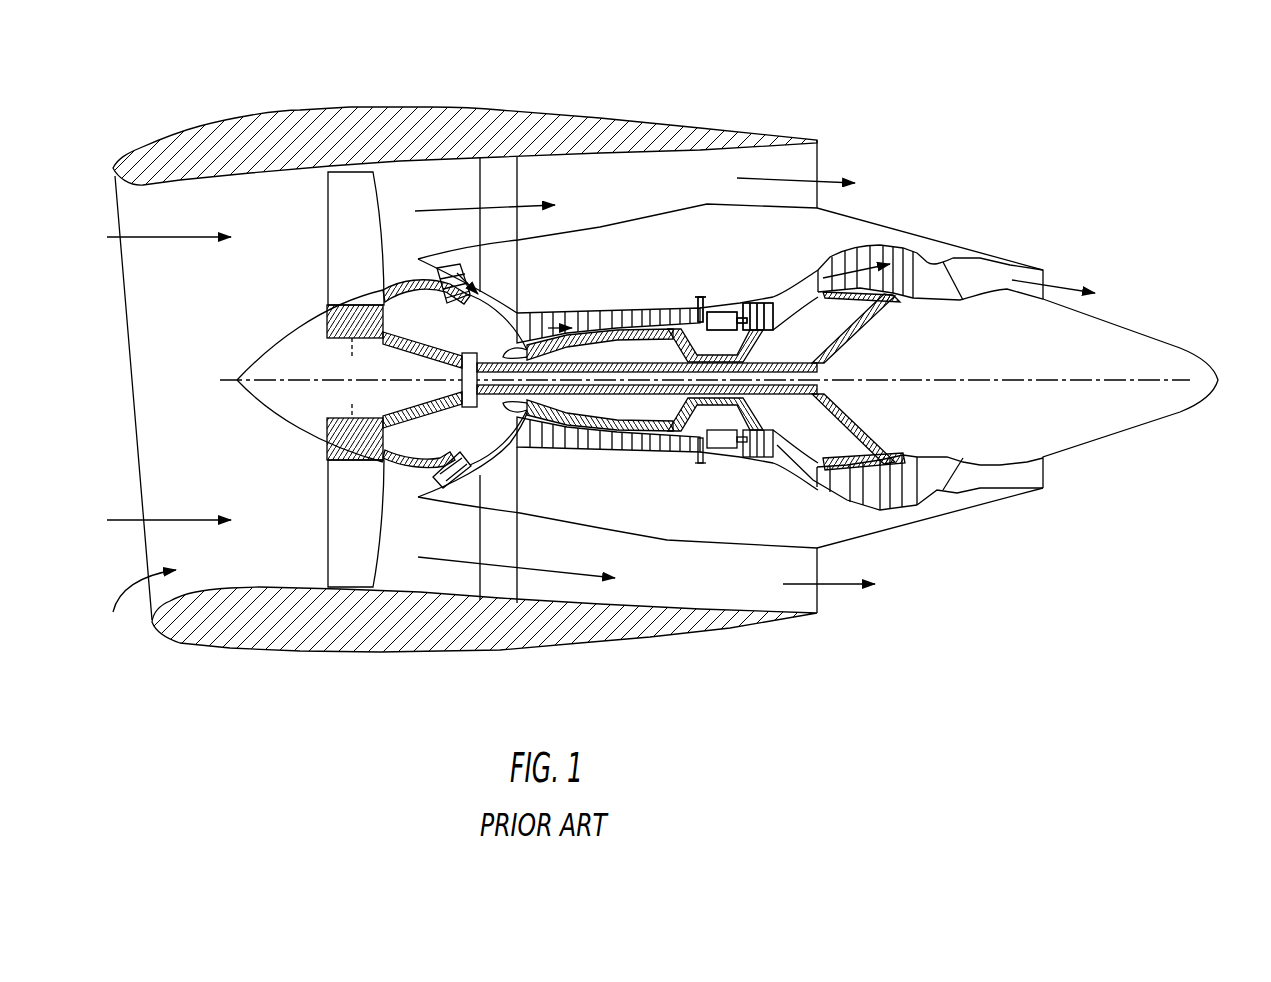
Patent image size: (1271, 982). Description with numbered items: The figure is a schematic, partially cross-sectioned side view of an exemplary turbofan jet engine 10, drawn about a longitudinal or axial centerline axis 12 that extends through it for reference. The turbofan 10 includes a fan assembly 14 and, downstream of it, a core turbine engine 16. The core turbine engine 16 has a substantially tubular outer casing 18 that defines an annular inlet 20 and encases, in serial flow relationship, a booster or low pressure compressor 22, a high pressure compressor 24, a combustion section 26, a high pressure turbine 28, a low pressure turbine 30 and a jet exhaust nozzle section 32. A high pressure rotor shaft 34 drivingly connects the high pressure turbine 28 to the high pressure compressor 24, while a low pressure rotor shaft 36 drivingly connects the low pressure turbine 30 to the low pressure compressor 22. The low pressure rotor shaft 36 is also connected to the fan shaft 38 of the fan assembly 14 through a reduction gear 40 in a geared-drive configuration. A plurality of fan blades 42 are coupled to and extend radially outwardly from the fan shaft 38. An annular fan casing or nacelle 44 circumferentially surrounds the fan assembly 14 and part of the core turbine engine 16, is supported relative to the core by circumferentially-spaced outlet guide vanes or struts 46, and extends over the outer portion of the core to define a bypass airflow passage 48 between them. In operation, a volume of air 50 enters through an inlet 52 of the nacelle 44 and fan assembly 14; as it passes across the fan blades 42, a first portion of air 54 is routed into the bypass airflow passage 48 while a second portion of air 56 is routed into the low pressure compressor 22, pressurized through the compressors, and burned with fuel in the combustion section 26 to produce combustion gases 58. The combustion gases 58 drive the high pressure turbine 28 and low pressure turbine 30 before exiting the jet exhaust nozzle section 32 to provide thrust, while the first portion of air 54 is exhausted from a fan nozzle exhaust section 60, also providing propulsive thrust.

The turbofan jet engine 10 is at (962, 131).
The longitudinal or axial centerline axis 12 is at (995, 380).
The fan assembly 14 is at (388, 192).
The core turbine engine 16 is at (707, 201).
The outer casing 18 is at (667, 540).
The annular inlet 20 is at (423, 485).
The low pressure compressor 22 is at (479, 456).
The high pressure compressor 24 is at (549, 449).
The combustion section 26 is at (720, 457).
The high pressure turbine 28 is at (782, 455).
The low pressure turbine 30 is at (900, 507).
The jet exhaust nozzle section 32 is at (965, 485).
The high pressure rotor shaft 34 is at (762, 352).
The low pressure rotor shaft 36 is at (862, 330).
The fan shaft 38 is at (382, 337).
The reduction gear 40 is at (468, 348).
The fan blades 42 is at (343, 203).
The nacelle 44 is at (322, 112).
The outlet guide vanes or struts 46 is at (512, 193).
The bypass airflow passage 48 is at (652, 195).
The volume of air 50 is at (185, 237).
The inlet 52 is at (137, 611).
The first portion of air 54 is at (467, 207).
The second portion of air 56 is at (404, 272).
The combustion gases 58 is at (796, 292).
The fan nozzle exhaust section 60 is at (785, 157).